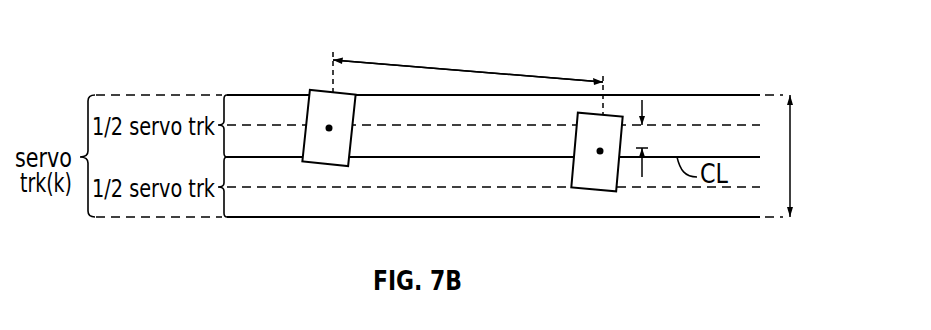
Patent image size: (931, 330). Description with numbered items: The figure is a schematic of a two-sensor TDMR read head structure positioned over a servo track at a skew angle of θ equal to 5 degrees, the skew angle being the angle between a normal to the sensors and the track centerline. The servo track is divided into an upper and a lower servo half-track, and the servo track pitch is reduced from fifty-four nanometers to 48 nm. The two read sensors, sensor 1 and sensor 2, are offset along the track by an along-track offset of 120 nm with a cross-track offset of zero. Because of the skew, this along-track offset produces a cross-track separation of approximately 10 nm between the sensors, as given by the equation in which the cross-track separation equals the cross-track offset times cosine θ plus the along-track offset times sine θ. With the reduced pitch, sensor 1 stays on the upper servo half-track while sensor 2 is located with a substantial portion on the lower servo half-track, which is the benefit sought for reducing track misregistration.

The sensor 1 is at (338, 150).
The sensor 2 is at (605, 177).
The ATO (anisotropic track offset) of 120 nm 120 is at (470, 71).
The skew angle of 5 degrees 5 is at (550, 51).
The CTS (cross-track separation) of 10 nm 10 is at (642, 100).
The TP (track pitch) of 48 nm 48 is at (789, 156).